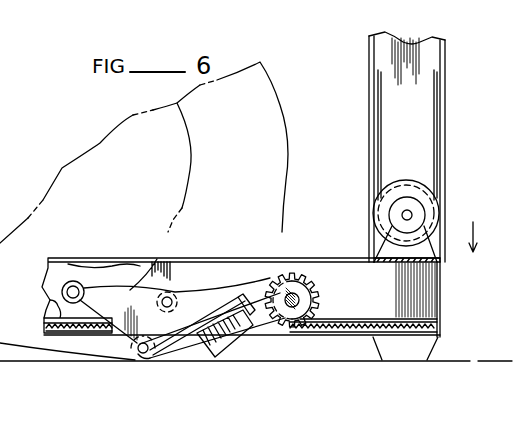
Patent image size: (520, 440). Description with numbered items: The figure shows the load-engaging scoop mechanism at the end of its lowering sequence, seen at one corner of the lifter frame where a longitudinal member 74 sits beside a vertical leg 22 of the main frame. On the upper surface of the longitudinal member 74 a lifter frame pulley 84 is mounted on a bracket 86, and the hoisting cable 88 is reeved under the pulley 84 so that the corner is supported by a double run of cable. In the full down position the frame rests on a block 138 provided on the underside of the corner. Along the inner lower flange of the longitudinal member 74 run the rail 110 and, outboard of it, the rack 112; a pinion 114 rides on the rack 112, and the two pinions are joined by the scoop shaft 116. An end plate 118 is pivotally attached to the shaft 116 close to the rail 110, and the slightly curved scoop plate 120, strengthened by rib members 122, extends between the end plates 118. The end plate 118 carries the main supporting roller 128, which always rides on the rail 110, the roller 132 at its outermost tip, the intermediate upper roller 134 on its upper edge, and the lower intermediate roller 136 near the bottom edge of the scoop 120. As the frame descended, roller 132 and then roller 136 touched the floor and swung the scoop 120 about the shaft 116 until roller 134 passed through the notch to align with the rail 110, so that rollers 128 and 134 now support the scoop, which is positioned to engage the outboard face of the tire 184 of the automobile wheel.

The vertical leg 22 is at (405, 40).
The hoisting cable 88 is at (440, 92).
The lifter frame pulley 84 is at (440, 217).
The bracket 86 is at (417, 253).
The longitudinal member 74 is at (310, 258).
The tire 184 is at (283, 115).
The rack 112 is at (46, 294).
The roller 132 is at (73, 281).
The end plate 118 is at (132, 292).
The intermediate upper roller 134 is at (166, 292).
The scoop plate 120 is at (190, 340).
The scoop shaft 116 is at (286, 297).
The pinion 114 is at (310, 302).
The roller 128 is at (341, 318).
The rail 110 is at (357, 322).
The rib member 122 is at (243, 340).
The lower intermediate roller 136 is at (136, 350).
The block 138 is at (425, 356).